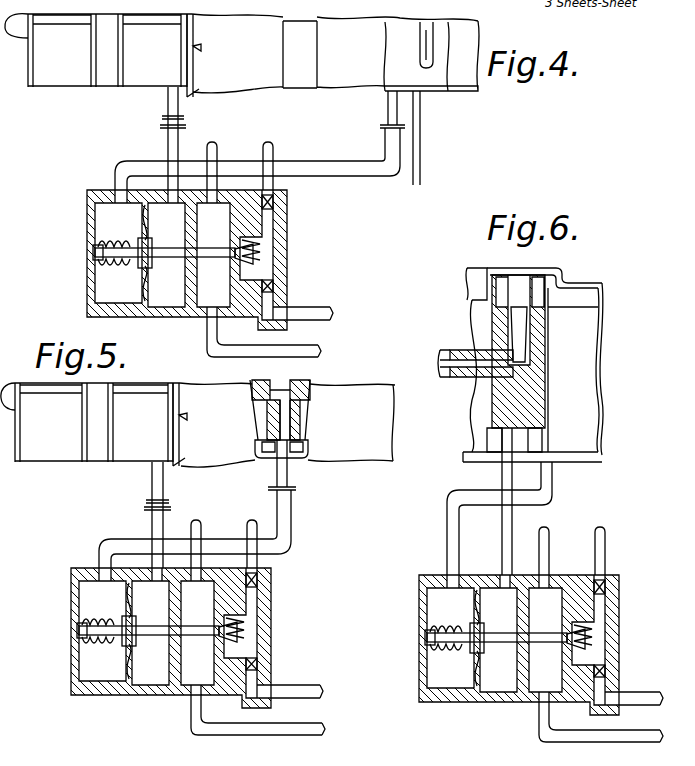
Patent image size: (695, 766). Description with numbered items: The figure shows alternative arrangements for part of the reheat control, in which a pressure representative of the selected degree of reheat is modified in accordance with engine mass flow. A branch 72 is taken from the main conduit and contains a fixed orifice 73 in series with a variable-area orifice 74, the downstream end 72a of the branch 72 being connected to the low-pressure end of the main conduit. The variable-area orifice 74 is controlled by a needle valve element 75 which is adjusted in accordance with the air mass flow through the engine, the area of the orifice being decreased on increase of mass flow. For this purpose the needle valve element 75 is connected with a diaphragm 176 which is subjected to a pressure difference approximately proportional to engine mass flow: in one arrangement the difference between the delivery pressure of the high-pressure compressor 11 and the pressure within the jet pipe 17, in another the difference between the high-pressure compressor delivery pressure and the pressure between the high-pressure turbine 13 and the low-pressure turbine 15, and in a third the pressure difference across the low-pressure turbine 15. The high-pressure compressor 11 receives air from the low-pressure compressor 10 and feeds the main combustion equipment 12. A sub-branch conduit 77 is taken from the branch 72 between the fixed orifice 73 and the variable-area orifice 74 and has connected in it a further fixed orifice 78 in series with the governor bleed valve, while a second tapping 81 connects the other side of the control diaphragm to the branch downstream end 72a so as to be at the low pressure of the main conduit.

In FIG. 4, the low-pressure compressor 10 is at (61, 78).
In FIG. 5, the low-pressure compressor 10 is at (55, 452).
In FIG. 4, the high-pressure compressor 11 is at (140, 78).
In FIG. 5, the high-pressure compressor 11 is at (126, 452).
In FIG. 4, the main combustion equipment 12 is at (240, 77).
In FIG. 5, the main combustion equipment 12 is at (212, 452).
In FIG. 5, the high-pressure turbine 13 is at (270, 456).
In FIG. 6, the high-pressure turbine 13 is at (497, 449).
In FIG. 5, the low-pressure turbine 15 is at (305, 456).
In FIG. 6, the low-pressure turbine 15 is at (538, 451).
In FIG. 4, the jet pipe 17 is at (437, 92).
In FIG. 5, the jet pipe 17 is at (373, 456).
In FIG. 4, the branch 72 is at (277, 150).
In FIG. 5, the branch 72 is at (258, 522).
In FIG. 6, the branch 72 is at (607, 547).
In FIG. 4, the downstream end of the branch 72a is at (222, 147).
In FIG. 5, the downstream end of the branch 72a is at (193, 522).
In FIG. 6, the downstream end of the branch 72a is at (552, 534).
In FIG. 4, the fixed orifice 73 is at (274, 204).
In FIG. 5, the fixed orifice 73 is at (258, 580).
In FIG. 6, the fixed orifice 73 is at (606, 586).
In FIG. 4, the variable-area orifice 74 is at (243, 239).
In FIG. 5, the variable-area orifice 74 is at (226, 621).
In FIG. 6, the variable-area orifice 74 is at (567, 622).
In FIG. 4, the needle valve element 75 is at (256, 255).
In FIG. 5, the needle valve element 75 is at (238, 631).
In FIG. 6, the needle valve element 75 is at (587, 636).
In FIG. 4, the sub-branch conduit 77 is at (330, 313).
In FIG. 5, the sub-branch conduit 77 is at (310, 697).
In FIG. 6, the sub-branch conduit 77 is at (625, 690).
In FIG. 4, the fixed orifice 78 is at (274, 288).
In FIG. 5, the fixed orifice 78 is at (258, 667).
In FIG. 6, the fixed orifice 78 is at (604, 667).
In FIG. 4, the second tapping 81 is at (316, 352).
In FIG. 5, the second tapping 81 is at (192, 716).
In FIG. 6, the second tapping 81 is at (537, 722).
In FIG. 4, the diaphragm 176 is at (115, 281).
In FIG. 5, the diaphragm 176 is at (125, 673).
In FIG. 6, the diaphragm 176 is at (463, 678).